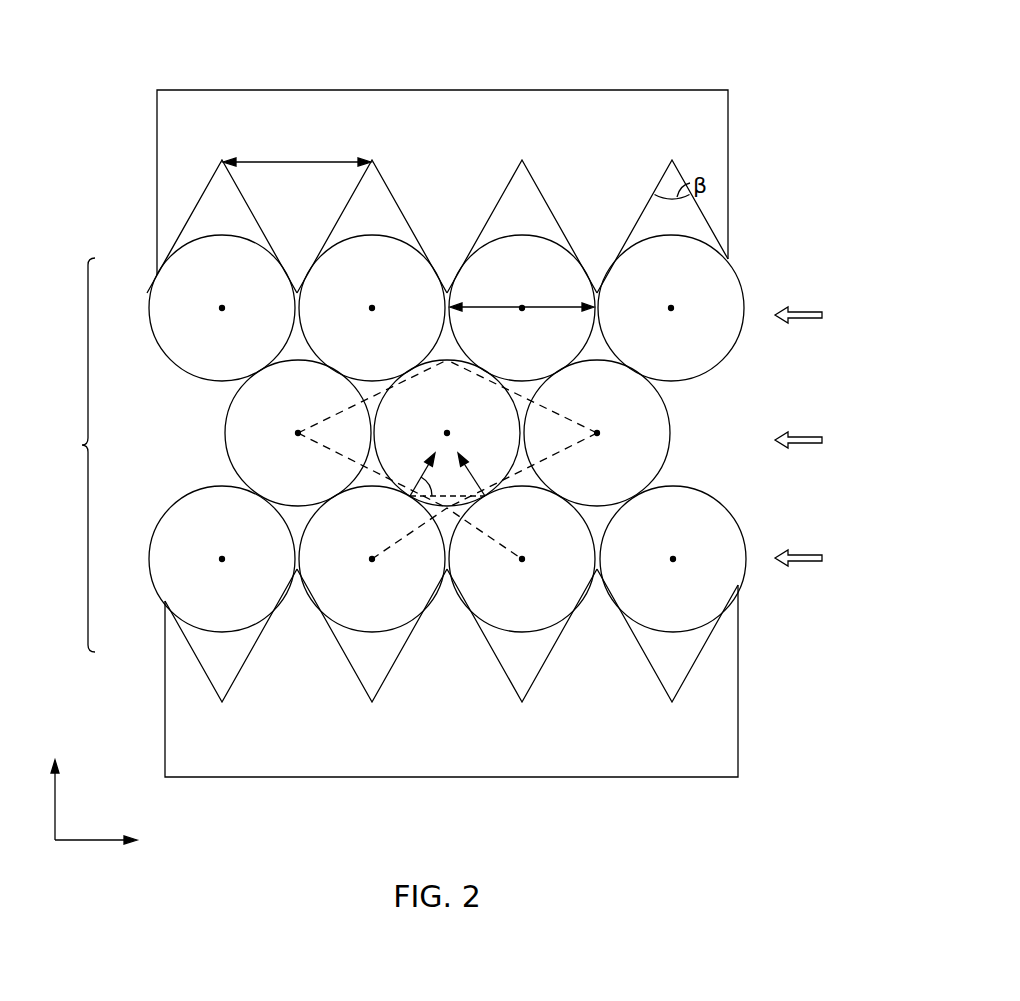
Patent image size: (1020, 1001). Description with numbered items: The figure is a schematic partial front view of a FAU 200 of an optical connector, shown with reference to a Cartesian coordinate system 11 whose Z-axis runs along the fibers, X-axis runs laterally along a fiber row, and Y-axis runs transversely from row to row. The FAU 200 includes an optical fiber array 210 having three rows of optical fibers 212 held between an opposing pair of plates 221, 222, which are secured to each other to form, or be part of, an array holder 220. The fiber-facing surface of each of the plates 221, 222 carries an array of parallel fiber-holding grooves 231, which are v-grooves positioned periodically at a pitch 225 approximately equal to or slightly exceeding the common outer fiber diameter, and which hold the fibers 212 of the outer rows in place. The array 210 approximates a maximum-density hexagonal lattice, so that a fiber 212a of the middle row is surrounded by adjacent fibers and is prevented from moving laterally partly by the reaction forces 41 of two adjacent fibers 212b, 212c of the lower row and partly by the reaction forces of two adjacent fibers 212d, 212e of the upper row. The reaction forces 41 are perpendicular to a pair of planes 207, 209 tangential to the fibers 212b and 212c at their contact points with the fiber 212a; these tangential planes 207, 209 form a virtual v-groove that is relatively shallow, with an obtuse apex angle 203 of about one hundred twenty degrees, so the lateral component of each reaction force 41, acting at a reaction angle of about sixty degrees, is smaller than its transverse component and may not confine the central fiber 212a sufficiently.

The FAU 200 is at (453, 49).
The array holder 220 is at (190, 55).
The plate 221 is at (307, 141).
The plate 222 is at (297, 732).
The pitch dimension 225 is at (299, 166).
The fiber-holding grooves 231 is at (657, 198).
The optical fibers 212 is at (229, 457).
The optical fiber 212a is at (419, 417).
The optical fiber 212b is at (322, 544).
The optical fiber 212c is at (576, 533).
The optical fiber 212d is at (493, 287).
The optical fiber 212e is at (344, 287).
The optical fiber array 210 is at (462, 455).
The tangential plane 207 is at (343, 462).
The tangential plane 209 is at (548, 470).
The apex angle 203 is at (445, 522).
The reaction forces 41 is at (418, 476).
The coordinate system 11 is at (66, 886).